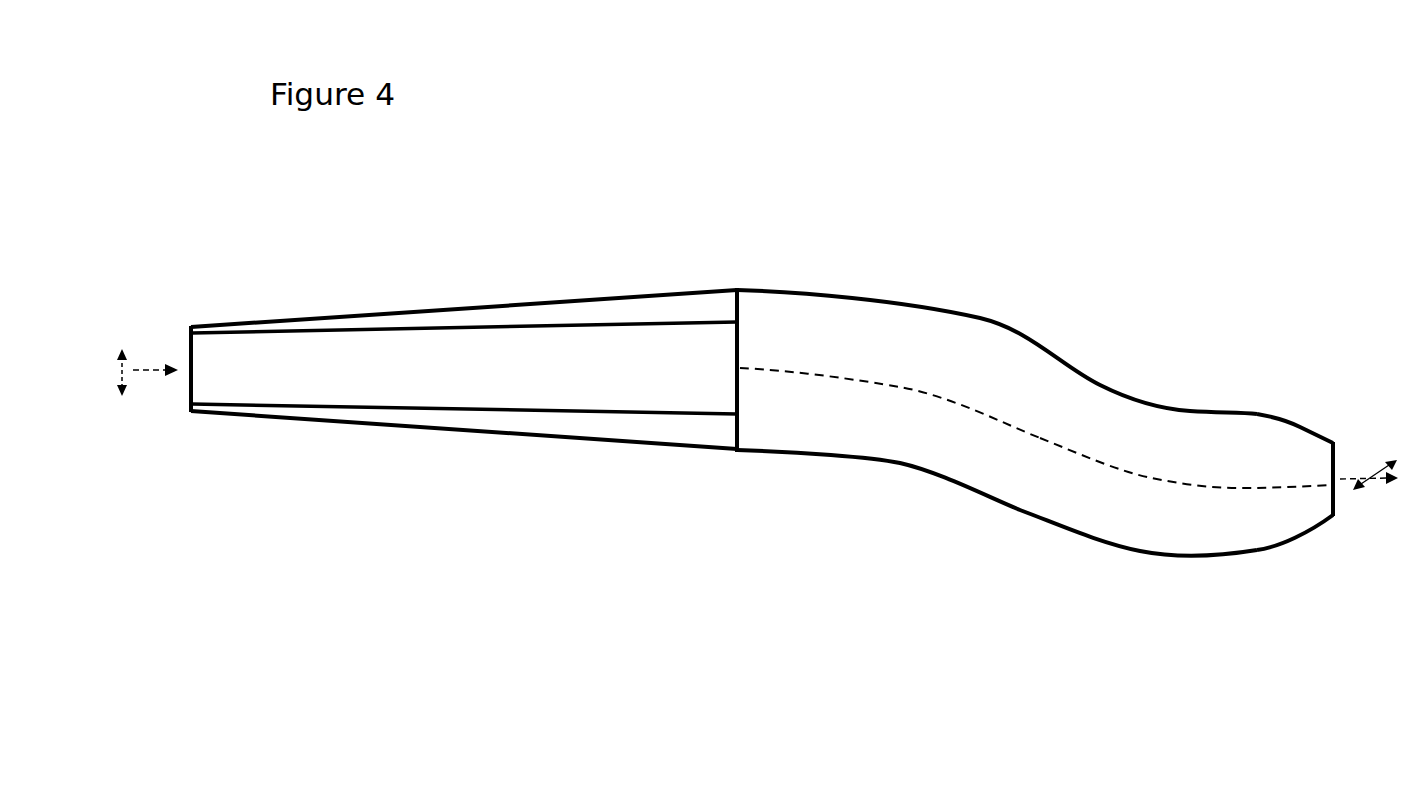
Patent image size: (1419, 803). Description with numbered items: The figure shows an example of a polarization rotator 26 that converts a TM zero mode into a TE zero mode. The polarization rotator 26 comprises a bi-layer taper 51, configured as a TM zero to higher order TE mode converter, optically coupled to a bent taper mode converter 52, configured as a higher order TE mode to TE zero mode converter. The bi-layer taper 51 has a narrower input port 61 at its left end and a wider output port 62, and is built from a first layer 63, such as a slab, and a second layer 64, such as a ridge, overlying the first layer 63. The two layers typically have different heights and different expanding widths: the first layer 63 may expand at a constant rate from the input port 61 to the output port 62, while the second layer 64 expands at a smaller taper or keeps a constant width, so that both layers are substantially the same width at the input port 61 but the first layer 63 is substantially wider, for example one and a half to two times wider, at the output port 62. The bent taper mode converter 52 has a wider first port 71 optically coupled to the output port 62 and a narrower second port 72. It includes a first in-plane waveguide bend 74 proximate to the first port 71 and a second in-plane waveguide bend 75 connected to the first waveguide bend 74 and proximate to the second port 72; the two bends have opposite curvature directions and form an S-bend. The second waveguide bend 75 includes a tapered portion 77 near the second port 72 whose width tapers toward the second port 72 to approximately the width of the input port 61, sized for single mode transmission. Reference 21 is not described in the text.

The polarization rotator 26 is at (836, 124).
The root portion 21 is at (142, 365).
The input port 61 is at (192, 382).
The second layer 64 is at (500, 370).
The first layer 63 is at (613, 428).
The first port 71 is at (738, 365).
The output port 62 is at (737, 348).
The bent taper mode converter 52 is at (979, 308).
The tapered portion 77 is at (1297, 425).
The second port 72 is at (1336, 507).
The bi-layer taper 51 is at (430, 433).
The first in-plane waveguide bend 74 is at (897, 387).
The second in-plane waveguide bend 75 is at (1152, 478).